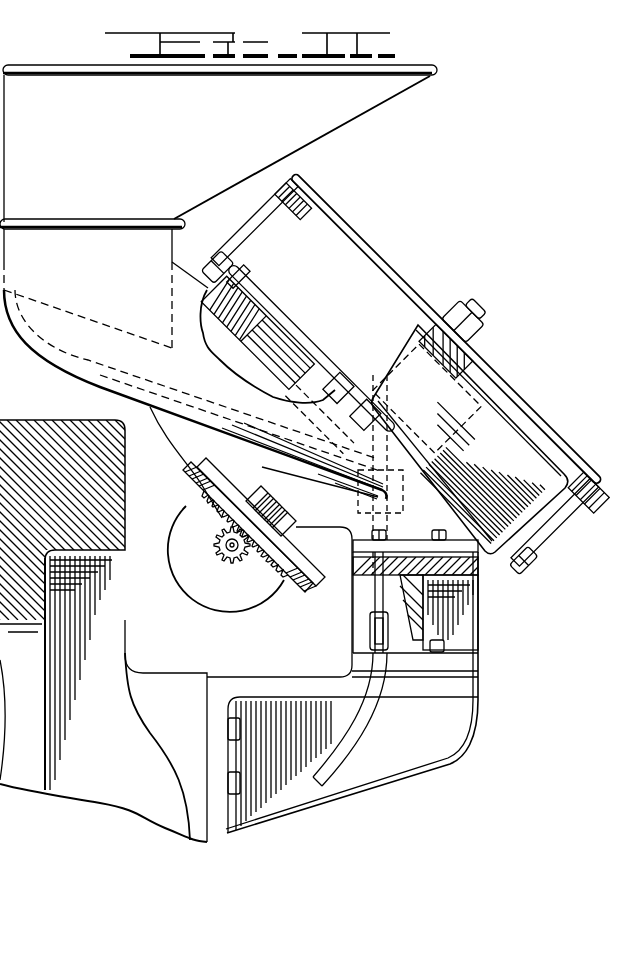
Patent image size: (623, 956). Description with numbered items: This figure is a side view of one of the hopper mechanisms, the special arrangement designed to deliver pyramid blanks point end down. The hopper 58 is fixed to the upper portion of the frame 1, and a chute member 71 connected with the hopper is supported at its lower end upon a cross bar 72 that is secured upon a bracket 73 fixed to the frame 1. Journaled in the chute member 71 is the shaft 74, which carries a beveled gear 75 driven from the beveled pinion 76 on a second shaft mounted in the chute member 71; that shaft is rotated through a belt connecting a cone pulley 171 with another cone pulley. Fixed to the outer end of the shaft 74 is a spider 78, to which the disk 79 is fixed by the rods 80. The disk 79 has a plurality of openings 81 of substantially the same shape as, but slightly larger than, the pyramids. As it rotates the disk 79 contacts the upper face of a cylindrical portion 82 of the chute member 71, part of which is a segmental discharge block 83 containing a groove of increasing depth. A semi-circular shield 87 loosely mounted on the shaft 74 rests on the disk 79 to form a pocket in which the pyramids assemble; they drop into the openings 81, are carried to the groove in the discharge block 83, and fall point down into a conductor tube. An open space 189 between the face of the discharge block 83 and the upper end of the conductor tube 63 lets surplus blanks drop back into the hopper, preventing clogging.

The hopper 58 is at (378, 103).
The chute member 71 is at (43, 360).
The spider 78 is at (485, 367).
The rods 80 is at (273, 233).
The disk 79 is at (250, 266).
The openings 81 is at (257, 278).
The segmental discharge block 83 is at (310, 357).
The open space 189 is at (330, 358).
The cylindrical portion 82 is at (350, 383).
The semi-circular shield 87 is at (537, 457).
The shaft 74 is at (250, 490).
The beveled gear 75 is at (297, 590).
The beveled pinion 76 is at (227, 563).
The cone pulley 171 is at (210, 603).
The frame 1 is at (120, 658).
The cross bar 72 is at (477, 615).
The conductor tube 63 is at (370, 733).
The bracket 73 is at (450, 747).